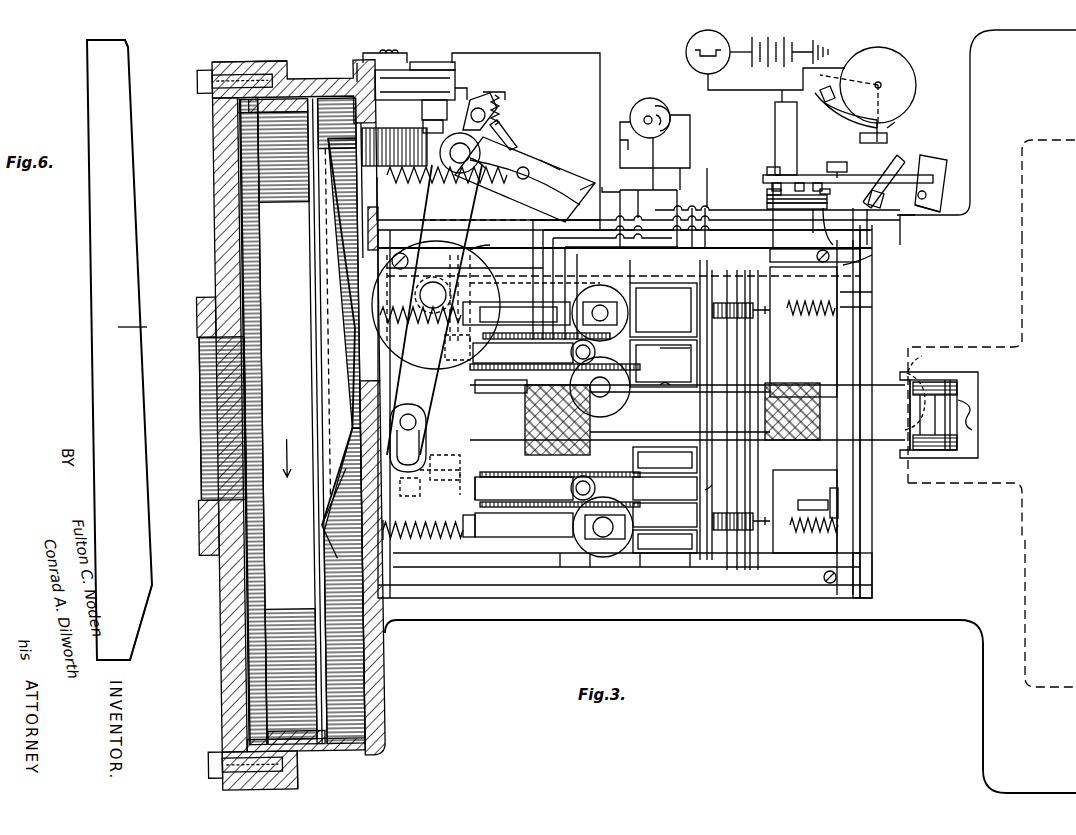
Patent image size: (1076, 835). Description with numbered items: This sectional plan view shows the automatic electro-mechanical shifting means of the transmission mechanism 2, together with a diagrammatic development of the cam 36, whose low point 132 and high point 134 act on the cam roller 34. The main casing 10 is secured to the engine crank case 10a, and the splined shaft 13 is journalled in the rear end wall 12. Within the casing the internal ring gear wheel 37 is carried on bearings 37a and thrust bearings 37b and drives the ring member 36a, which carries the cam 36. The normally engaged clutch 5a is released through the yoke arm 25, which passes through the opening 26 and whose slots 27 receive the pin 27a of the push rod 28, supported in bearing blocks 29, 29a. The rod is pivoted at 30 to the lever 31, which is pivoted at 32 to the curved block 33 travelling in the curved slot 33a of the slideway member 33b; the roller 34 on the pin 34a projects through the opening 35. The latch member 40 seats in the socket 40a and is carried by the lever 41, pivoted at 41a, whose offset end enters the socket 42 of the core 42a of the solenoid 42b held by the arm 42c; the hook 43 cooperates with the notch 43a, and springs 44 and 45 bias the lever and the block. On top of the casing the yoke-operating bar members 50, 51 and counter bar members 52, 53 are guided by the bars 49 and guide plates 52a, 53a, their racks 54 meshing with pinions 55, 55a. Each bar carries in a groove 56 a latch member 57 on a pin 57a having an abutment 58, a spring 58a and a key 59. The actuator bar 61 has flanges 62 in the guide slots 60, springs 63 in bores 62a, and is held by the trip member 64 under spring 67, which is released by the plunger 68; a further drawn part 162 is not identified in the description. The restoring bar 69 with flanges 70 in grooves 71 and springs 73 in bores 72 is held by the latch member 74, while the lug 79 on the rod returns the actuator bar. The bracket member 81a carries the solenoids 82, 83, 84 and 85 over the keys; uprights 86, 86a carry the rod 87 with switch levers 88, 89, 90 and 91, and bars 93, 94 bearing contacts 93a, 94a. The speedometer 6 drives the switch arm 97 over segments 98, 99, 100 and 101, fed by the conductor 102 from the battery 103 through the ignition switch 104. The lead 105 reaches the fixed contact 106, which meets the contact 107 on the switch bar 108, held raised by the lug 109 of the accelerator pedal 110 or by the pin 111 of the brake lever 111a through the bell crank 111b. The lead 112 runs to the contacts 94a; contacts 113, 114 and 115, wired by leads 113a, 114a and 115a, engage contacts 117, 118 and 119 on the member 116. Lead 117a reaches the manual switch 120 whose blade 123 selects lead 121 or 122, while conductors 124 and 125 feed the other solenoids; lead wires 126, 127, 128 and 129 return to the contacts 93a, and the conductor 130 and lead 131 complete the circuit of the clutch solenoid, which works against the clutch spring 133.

In FIG. 3, the transmission mechanism 2 is at (212, 140).
In FIG. 3, the clutch 5a is at (1022, 575).
In FIG. 3, the speedometer 6 is at (897, 62).
In FIG. 3, the main casing or housing 10 is at (385, 700).
In FIG. 3, the engine crank case 10a is at (983, 662).
In FIG. 3, the rear end wall 12 is at (212, 212).
In FIG. 3, the splined shaft 13 is at (352, 470).
In FIG. 3, the arm of yoke 25 is at (930, 452).
In FIG. 3, the opening 26 is at (967, 372).
In FIG. 3, the longitudinal slots 27 is at (918, 366).
In FIG. 3, the pin 27a is at (905, 418).
In FIG. 3, the push rod 28 is at (878, 396).
In FIG. 3, the bearing block 29 is at (822, 385).
In FIG. 3, the bearing block 29a is at (492, 488).
In FIG. 3, the pivot 30 is at (425, 452).
In FIG. 3, the lever 31 is at (432, 212).
In FIG. 3, the pivot 32 is at (458, 168).
In FIG. 3, the curved block 33 is at (525, 179).
In FIG. 3, the curved slot 33a is at (400, 167).
In FIG. 3, the slideway member 33b is at (552, 165).
In FIG. 3, the cam roller or disc 34 is at (468, 250).
In FIG. 3, the pin 34a is at (436, 282).
In FIG. 3, the opening 35 is at (378, 232).
In FIG. 6, the cam 36 is at (148, 522).
In FIG. 3, the cam 36 is at (337, 331).
In FIG. 6, the ring member 36a is at (147, 320).
In FIG. 3, the internal ring gear wheel 37 is at (313, 421).
In FIG. 3, the bearings 37a is at (287, 775).
In FIG. 3, the thrust bearings 37b is at (237, 155).
In FIG. 3, the latch member 40 is at (465, 89).
In FIG. 3, the socket 40a is at (485, 155).
In FIG. 3, the lever 41 is at (485, 93).
In FIG. 3, the pivot 41a is at (487, 110).
In FIG. 3, the socket 42 is at (422, 110).
In FIG. 3, the core or armature 42a is at (425, 98).
In FIG. 3, the solenoid 42b is at (425, 62).
In FIG. 3, the arm 42c is at (372, 68).
In FIG. 3, the hook or catch 43 is at (510, 142).
In FIG. 3, the notch or kerf 43a is at (582, 190).
In FIG. 3, the spring 44 is at (502, 105).
In FIG. 3, the spring 45 is at (490, 183).
In FIG. 3, the outside bars 49 is at (444, 487).
In FIG. 3, the yoke-operating bar member 50 is at (665, 461).
In FIG. 3, the yoke-operating bar member 51 is at (661, 370).
In FIG. 3, the counter-plate or bar member 52 is at (665, 515).
In FIG. 3, the guide plate 52a is at (692, 585).
In FIG. 3, the counter-plate or bar member 53 is at (663, 310).
In FIG. 3, the guide plate 53a is at (872, 255).
In FIG. 3, the toothed rack portion 54 is at (660, 325).
In FIG. 3, the pinion 55 is at (570, 490).
In FIG. 3, the pinion 55a is at (565, 352).
In FIG. 3, the groove or recess 56 is at (524, 527).
In FIG. 3, the latch or lever member 57 is at (516, 315).
In FIG. 3, the transverse pin 57a is at (560, 567).
In FIG. 3, the abutment portion 58 is at (466, 518).
In FIG. 3, the compression spring 58a is at (612, 312).
In FIG. 3, the control finger or key 59 is at (605, 557).
In FIG. 3, the guide slots 60 is at (520, 275).
In FIG. 3, the actuator bar 61 is at (410, 492).
In FIG. 3, the supporting flanges 62 is at (510, 583).
In FIG. 3, the sockets or bores 62a is at (438, 425).
In FIG. 3, the coil springs 63 is at (394, 519).
In FIG. 3, the detent or trip member 64 is at (428, 408).
In FIG. 3, the compression spring 67 is at (501, 387).
In FIG. 3, the rod or plunger 68 is at (670, 387).
In FIG. 3, the restoring bar 69 is at (836, 492).
In FIG. 3, the lateral flanges 70 is at (845, 560).
In FIG. 3, the guide slots or grooves 71 is at (848, 279).
In FIG. 3, the sockets or bores 72 is at (808, 320).
In FIG. 3, the coil springs 73 is at (837, 316).
In FIG. 3, the latch member 74 is at (807, 496).
In FIG. 3, the lug member 79 is at (424, 425).
In FIG. 3, the bracket member 81a is at (590, 585).
In FIG. 3, the solenoid 82 is at (640, 567).
In FIG. 3, the solenoid 83 is at (596, 490).
In FIG. 3, the solenoid 84 is at (596, 352).
In FIG. 3, the solenoid 85 is at (655, 270).
In FIG. 3, the upright supporting member 86 is at (778, 570).
In FIG. 3, the upright supporting member 86a is at (775, 255).
In FIG. 3, the supporting rod 87 is at (730, 280).
In FIG. 3, the switch lever 88 is at (713, 518).
In FIG. 3, the switch lever 89 is at (755, 480).
In FIG. 3, the switch lever 90 is at (745, 338).
In FIG. 3, the switch lever 91 is at (742, 310).
In FIG. 3, the supporting bar 93 is at (712, 285).
In FIG. 3, the contacts 93a is at (712, 545).
In FIG. 3, the supporting bar 94 is at (758, 345).
In FIG. 3, the contacts 94a is at (755, 565).
In FIG. 3, the switch arm 97 is at (895, 122).
In FIG. 3, the switch segment 98 is at (887, 135).
In FIG. 3, the switch segment 99 is at (860, 140).
In FIG. 3, the switch segment 100 is at (835, 105).
In FIG. 3, the switch segment 101 is at (822, 100).
In FIG. 3, the conductor 102 is at (726, 80).
In FIG. 3, the source of current 103 is at (766, 42).
In FIG. 3, the ignition switch 104 is at (697, 45).
In FIG. 3, the lead wire 105 is at (885, 160).
In FIG. 3, the fixed contact 106 is at (847, 168).
In FIG. 3, the contact 107 is at (825, 189).
In FIG. 3, the switch bar 108 is at (770, 190).
In FIG. 3, the lug or arm 109 is at (882, 198).
In FIG. 3, the accelerator pedal 110 is at (870, 212).
In FIG. 3, the pin 111 is at (925, 212).
In FIG. 3, the brake lever 111a is at (944, 183).
In FIG. 3, the bell crank member 111b is at (926, 196).
In FIG. 3, the lead 112 is at (872, 293).
In FIG. 3, the contact 113 is at (799, 183).
In FIG. 3, the lead wire 113a is at (817, 183).
In FIG. 3, the contact 114 is at (776, 183).
In FIG. 3, the lead wire 114a is at (772, 167).
In FIG. 3, the contact 115 is at (770, 180).
In FIG. 3, the lead wire 115a is at (792, 118).
In FIG. 3, the contact supporting member 116 is at (838, 222).
In FIG. 3, the contact 117 is at (841, 183).
In FIG. 3, the lead 117a is at (667, 192).
In FIG. 3, the contact 118 is at (770, 206).
In FIG. 3, the contact 119 is at (770, 196).
In FIG. 3, the manual switch 120 is at (638, 105).
In FIG. 3, the circuit lead 121 is at (686, 112).
In FIG. 3, the circuit lead 122 is at (630, 150).
In FIG. 3, the switch blade 123 is at (655, 106).
In FIG. 3, the conductor 124 is at (648, 219).
In FIG. 3, the conductor 125 is at (545, 250).
In FIG. 3, the lead wire 126 is at (663, 543).
In FIG. 3, the lead wire 127 is at (672, 452).
In FIG. 3, the lead wire 128 is at (664, 363).
In FIG. 3, the lead wire 129 is at (678, 407).
In FIG. 3, the conductor 130 is at (600, 53).
In FIG. 3, the lead 131 is at (368, 53).
In FIG. 6, the low point of cam 132 is at (128, 45).
In FIG. 3, the low point of cam 132 is at (315, 565).
In FIG. 3, the clutch spring 133 is at (970, 440).
In FIG. 6, the high point of cam 134 is at (152, 585).
In FIG. 3, the high point of cam 134 is at (335, 428).
In FIG. 3, the guide 162 is at (548, 280).